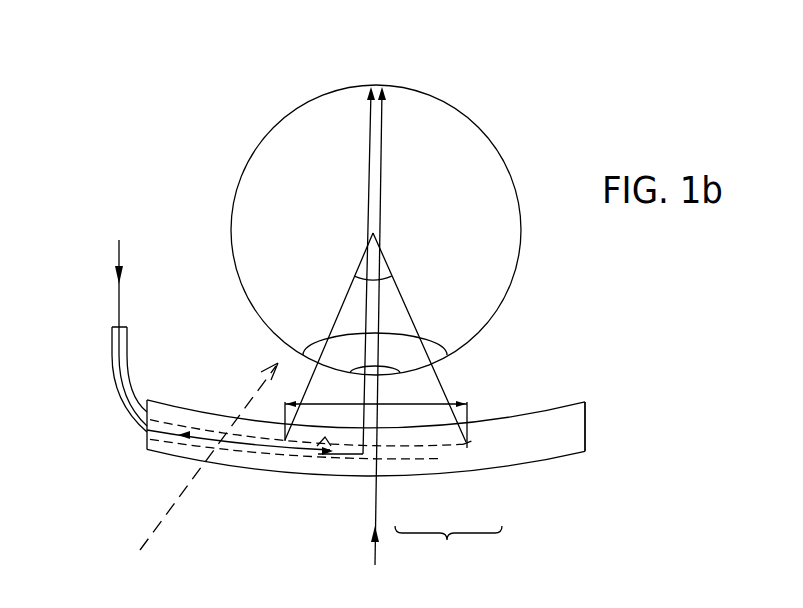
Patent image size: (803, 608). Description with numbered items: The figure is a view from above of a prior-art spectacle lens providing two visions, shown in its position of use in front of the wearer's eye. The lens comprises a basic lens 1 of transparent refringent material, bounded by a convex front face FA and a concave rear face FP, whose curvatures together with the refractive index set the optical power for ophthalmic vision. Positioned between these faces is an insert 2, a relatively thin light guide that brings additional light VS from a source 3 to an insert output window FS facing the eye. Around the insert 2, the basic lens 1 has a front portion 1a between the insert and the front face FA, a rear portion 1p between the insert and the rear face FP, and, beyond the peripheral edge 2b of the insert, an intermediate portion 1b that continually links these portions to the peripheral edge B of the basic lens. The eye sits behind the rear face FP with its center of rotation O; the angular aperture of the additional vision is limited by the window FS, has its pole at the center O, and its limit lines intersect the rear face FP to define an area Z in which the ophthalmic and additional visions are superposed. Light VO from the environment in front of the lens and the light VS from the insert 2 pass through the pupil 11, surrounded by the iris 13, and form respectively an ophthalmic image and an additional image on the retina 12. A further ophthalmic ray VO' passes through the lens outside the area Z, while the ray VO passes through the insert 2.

The retina 12 is at (380, 84).
The iris 13 is at (391, 347).
The pupil 11 is at (379, 372).
The center of rotation of the eye O is at (372, 233).
The additional light VS is at (369, 126).
The ophthalmic light VO is at (408, 328).
The ophthalmic light ray VO' is at (209, 466).
The peripheral edge of the basic lens B is at (391, 431).
The rear face FP is at (558, 405).
The front face FA is at (558, 461).
The basic lens 1 is at (448, 550).
The front portion 1a is at (417, 467).
The rear portion 1p is at (428, 438).
The intermediate portion 1b is at (502, 447).
The insert 2 is at (267, 450).
The peripheral edge of the insert 2b is at (474, 440).
The insert output window FS is at (318, 453).
The superposition area Z is at (376, 412).
The source 3 is at (112, 342).